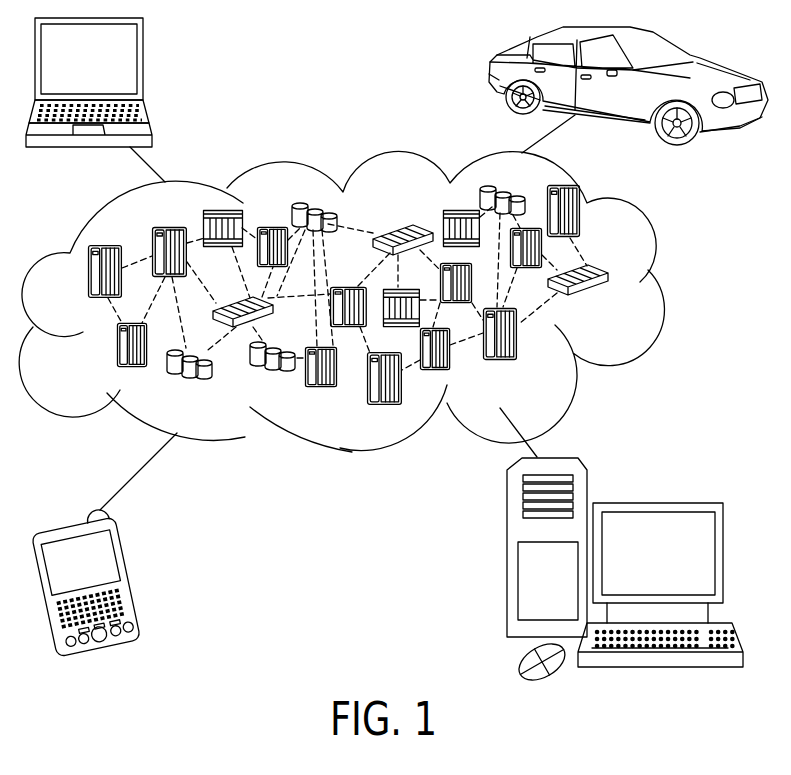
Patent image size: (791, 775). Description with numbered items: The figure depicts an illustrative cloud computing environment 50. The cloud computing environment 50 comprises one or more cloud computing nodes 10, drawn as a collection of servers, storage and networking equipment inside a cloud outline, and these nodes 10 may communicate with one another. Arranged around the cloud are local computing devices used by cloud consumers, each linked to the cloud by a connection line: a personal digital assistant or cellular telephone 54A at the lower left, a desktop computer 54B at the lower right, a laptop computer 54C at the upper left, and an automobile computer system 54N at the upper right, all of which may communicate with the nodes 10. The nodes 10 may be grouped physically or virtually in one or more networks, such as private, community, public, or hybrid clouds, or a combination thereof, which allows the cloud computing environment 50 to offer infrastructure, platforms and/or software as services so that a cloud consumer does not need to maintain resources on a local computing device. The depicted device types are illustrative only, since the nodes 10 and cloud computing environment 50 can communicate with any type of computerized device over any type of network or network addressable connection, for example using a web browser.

The cloud computing nodes 10 is at (617, 297).
The cloud computing environment 50 is at (658, 277).
The personal digital assistant or cellular telephone 54A is at (132, 575).
The desktop computer 54B is at (657, 502).
The laptop computer 54C is at (143, 68).
The automobile computer system 54N is at (488, 78).